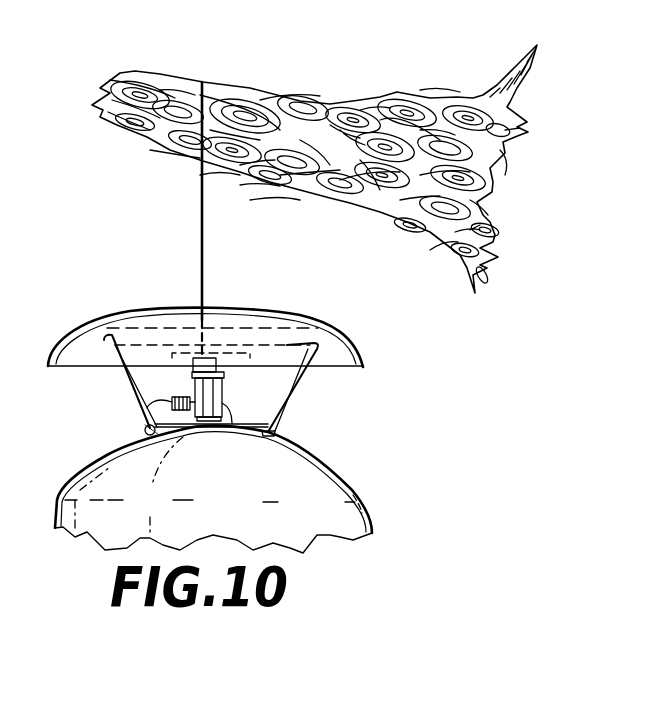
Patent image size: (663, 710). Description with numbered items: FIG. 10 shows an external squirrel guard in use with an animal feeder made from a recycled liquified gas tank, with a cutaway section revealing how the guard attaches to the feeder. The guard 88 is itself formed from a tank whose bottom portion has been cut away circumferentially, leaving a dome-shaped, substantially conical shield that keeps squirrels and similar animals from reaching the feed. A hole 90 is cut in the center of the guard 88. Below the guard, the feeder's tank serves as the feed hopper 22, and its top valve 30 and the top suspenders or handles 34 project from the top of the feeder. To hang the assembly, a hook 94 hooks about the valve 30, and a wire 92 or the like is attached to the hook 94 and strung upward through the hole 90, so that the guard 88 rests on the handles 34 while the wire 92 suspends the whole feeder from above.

The hook 94 is at (207, 82).
The wire 92 is at (201, 194).
The hole 90 is at (200, 306).
The guard 88 is at (257, 311).
The handles 34 is at (292, 397).
The top valve 30 is at (140, 423).
The feed hopper 22 is at (455, 494).